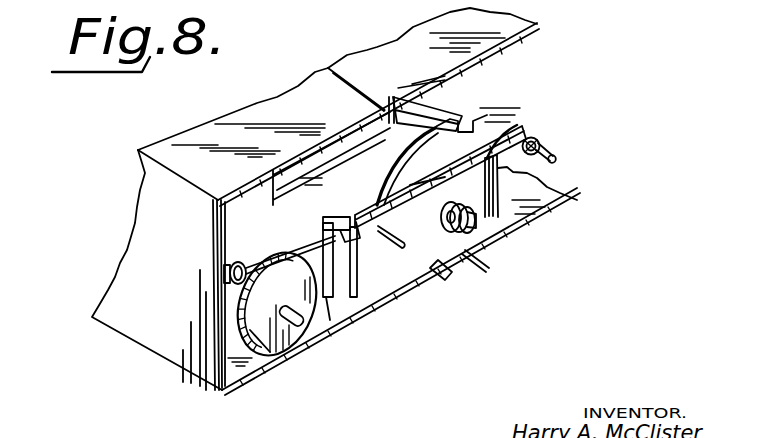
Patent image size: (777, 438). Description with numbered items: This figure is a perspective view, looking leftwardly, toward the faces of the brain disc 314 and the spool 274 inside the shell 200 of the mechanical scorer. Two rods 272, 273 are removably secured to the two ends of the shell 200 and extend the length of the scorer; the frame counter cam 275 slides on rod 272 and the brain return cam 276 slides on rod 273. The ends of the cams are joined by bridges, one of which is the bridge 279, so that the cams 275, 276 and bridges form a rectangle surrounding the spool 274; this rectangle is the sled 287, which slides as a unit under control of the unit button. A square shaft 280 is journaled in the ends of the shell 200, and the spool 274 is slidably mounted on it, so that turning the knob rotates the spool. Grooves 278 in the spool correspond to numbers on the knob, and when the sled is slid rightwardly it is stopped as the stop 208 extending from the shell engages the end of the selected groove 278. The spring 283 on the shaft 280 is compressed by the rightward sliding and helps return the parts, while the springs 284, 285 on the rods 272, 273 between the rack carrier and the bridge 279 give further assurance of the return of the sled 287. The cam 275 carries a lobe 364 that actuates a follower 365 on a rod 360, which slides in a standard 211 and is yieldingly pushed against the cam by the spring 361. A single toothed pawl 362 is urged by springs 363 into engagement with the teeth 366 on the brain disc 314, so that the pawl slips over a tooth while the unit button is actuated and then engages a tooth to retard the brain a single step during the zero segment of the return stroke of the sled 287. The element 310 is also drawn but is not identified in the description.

The shell 200 is at (131, 344).
The stop 208 is at (398, 112).
The standard 211 is at (330, 294).
The rod 272 is at (558, 153).
The rod 273 is at (437, 274).
The spool 274 is at (448, 156).
The frame counter cam 275 is at (462, 110).
The brain return cam 276 is at (316, 177).
The grooves 278 is at (416, 132).
The bridge 279 is at (500, 127).
The square shaft 280 is at (442, 237).
The spring 283 is at (538, 221).
The spring 284 is at (542, 140).
The spring 285 is at (386, 228).
The sled 287 is at (462, 254).
The disk 310 is at (296, 337).
The brain disc 314 is at (263, 346).
The rod 360 is at (279, 255).
The spring 361 is at (228, 264).
The single toothed pawl 362 is at (339, 312).
The springs 363 is at (266, 180).
The lobe 364 is at (348, 302).
The follower 365 is at (338, 226).
The teeth 366 is at (274, 289).